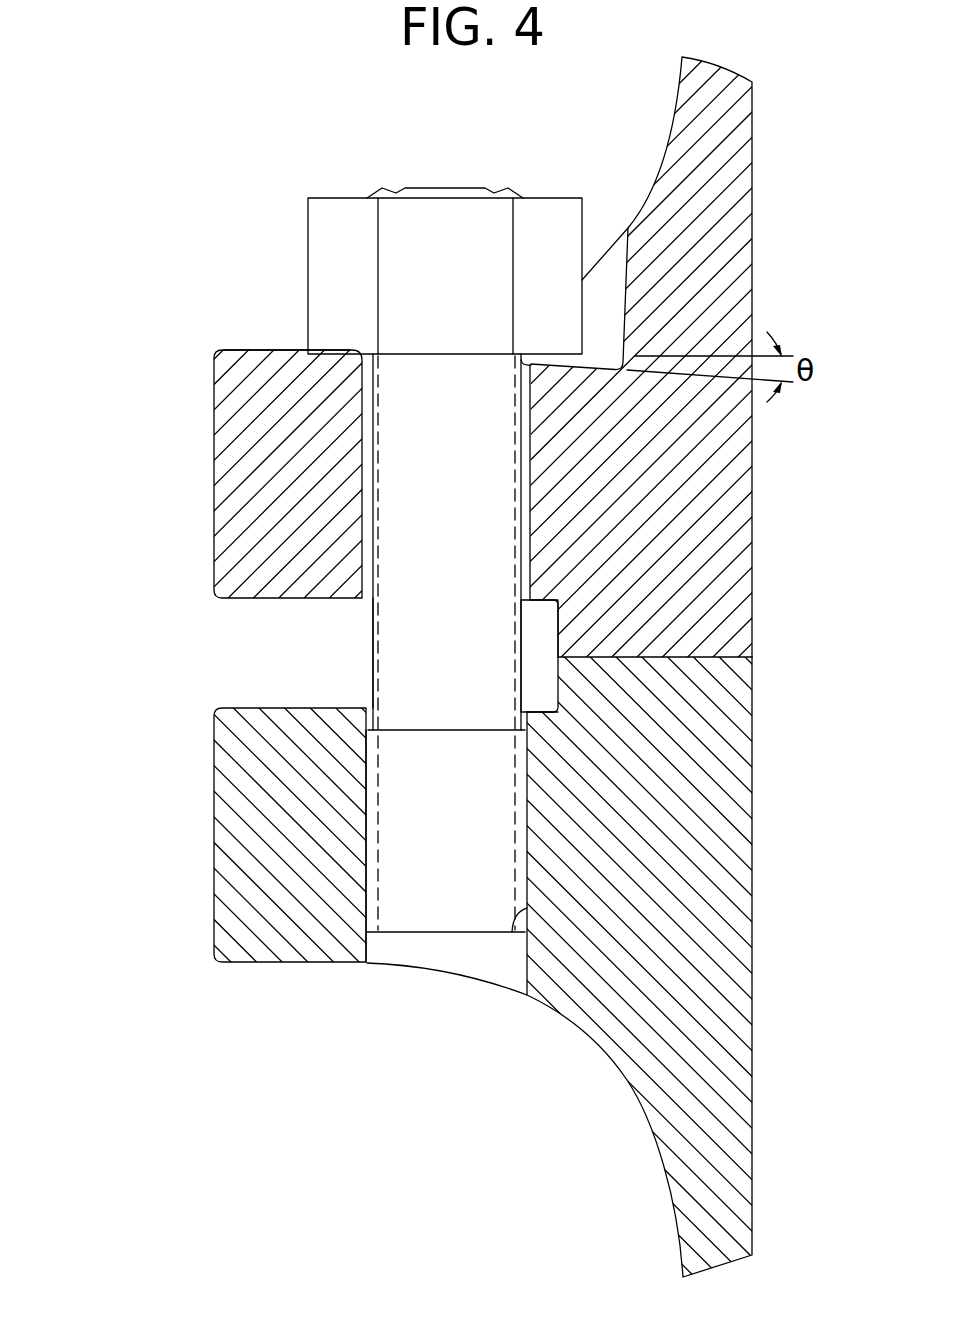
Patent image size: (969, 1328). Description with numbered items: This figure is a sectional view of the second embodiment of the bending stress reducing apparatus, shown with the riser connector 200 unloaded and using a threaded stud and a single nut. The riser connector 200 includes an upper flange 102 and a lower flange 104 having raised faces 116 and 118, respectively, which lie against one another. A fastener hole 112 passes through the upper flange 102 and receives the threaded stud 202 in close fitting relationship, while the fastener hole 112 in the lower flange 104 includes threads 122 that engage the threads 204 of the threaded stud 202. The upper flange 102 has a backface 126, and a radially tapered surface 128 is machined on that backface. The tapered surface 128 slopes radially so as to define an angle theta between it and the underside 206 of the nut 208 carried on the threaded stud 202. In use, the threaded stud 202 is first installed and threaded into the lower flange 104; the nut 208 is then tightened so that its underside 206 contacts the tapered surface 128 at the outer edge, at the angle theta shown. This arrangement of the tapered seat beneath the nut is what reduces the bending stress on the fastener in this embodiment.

The upper flange 102 is at (214, 578).
The lower flange 104 is at (214, 877).
The fastener hole 112 is at (373, 712).
The raised face 116 is at (688, 658).
The raised face 118 is at (708, 657).
The threads 122 is at (525, 860).
The backface 126 is at (245, 350).
The radially tapered surface 128 is at (543, 364).
The riser connector 200 is at (124, 636).
The threaded stud 202 is at (528, 620).
The threads 204 is at (516, 843).
The underside 206 is at (408, 356).
The nut 208 is at (488, 192).